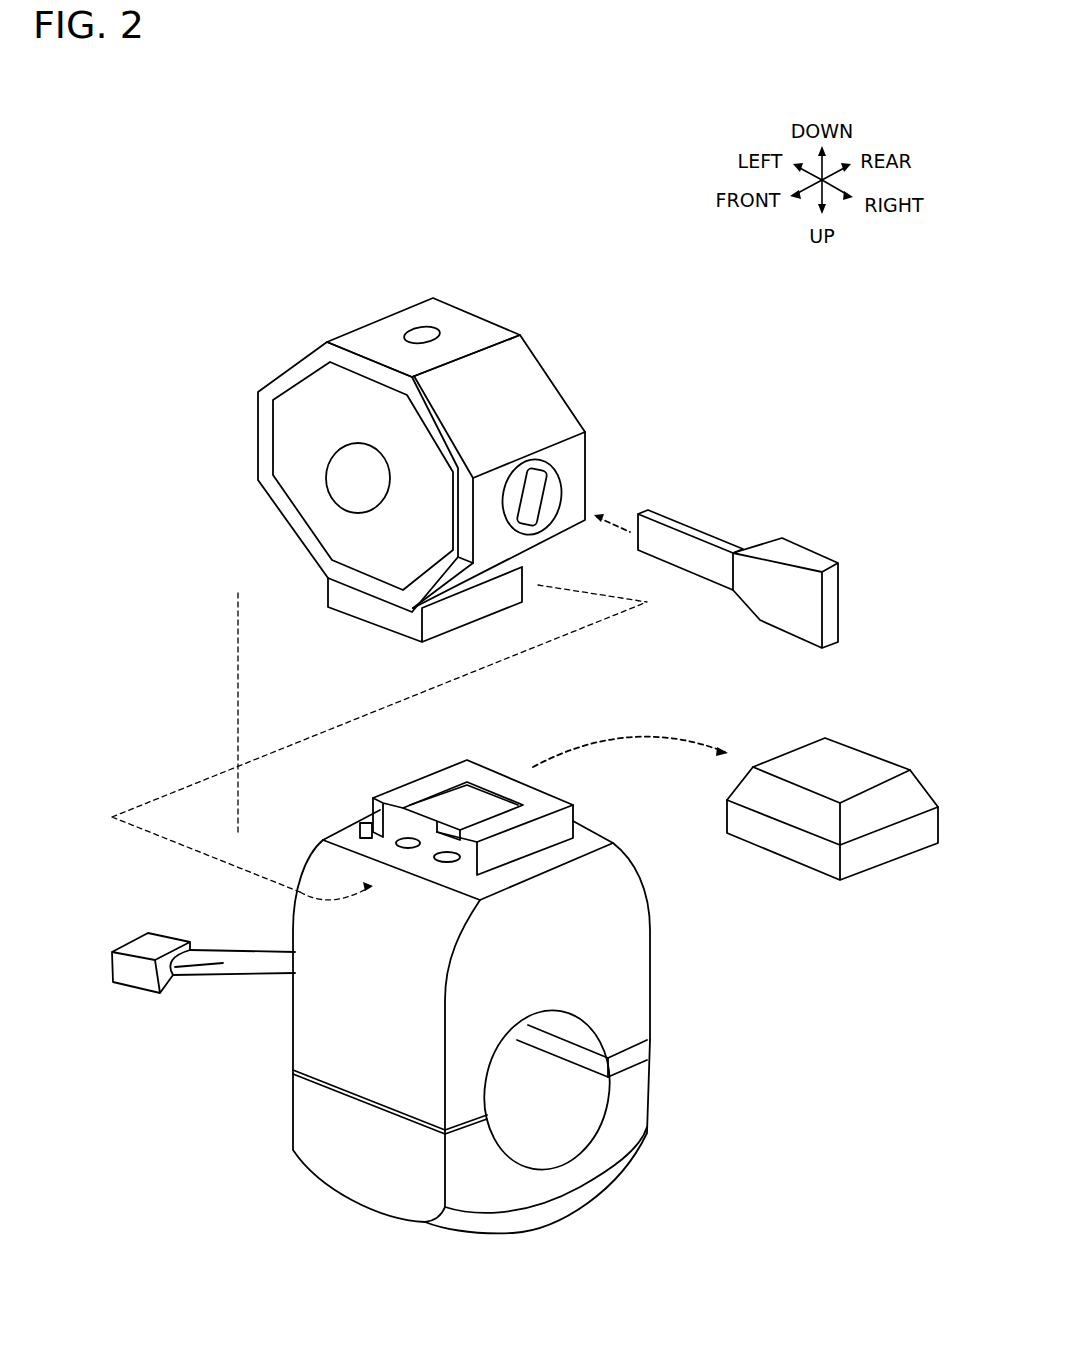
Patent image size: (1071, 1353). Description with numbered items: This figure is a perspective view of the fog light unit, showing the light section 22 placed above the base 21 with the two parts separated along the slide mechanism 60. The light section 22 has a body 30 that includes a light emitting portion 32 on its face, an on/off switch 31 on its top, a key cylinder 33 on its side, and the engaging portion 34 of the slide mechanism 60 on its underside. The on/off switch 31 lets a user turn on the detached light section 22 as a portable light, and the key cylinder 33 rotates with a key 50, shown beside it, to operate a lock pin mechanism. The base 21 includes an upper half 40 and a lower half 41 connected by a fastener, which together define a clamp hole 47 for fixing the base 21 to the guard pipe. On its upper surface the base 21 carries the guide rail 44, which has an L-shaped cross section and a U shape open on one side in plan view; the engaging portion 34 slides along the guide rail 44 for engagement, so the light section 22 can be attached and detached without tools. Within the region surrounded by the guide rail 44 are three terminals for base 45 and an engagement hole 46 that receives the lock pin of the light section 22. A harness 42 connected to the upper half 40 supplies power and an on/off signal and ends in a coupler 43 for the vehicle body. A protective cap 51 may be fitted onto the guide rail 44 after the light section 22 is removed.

The base 21 is at (255, 1115).
The light section 22 is at (215, 385).
The body 30 is at (527, 383).
The on/off switch 31 is at (418, 328).
The light emitting portion 32 is at (290, 418).
The key cylinder 33 is at (553, 480).
The engaging portion 34 is at (355, 595).
The upper half 40 is at (310, 1030).
The lower half 41 is at (320, 1140).
The harness 42 is at (223, 963).
The coupler 43 is at (133, 977).
The guide rail 44 is at (540, 800).
The terminals for base 45 is at (455, 848).
The engagement hole 46 is at (480, 800).
The clamp hole 47 is at (557, 1110).
The key 50 is at (765, 568).
The protective cap 51 is at (812, 760).
The slide mechanism 60 is at (238, 713).